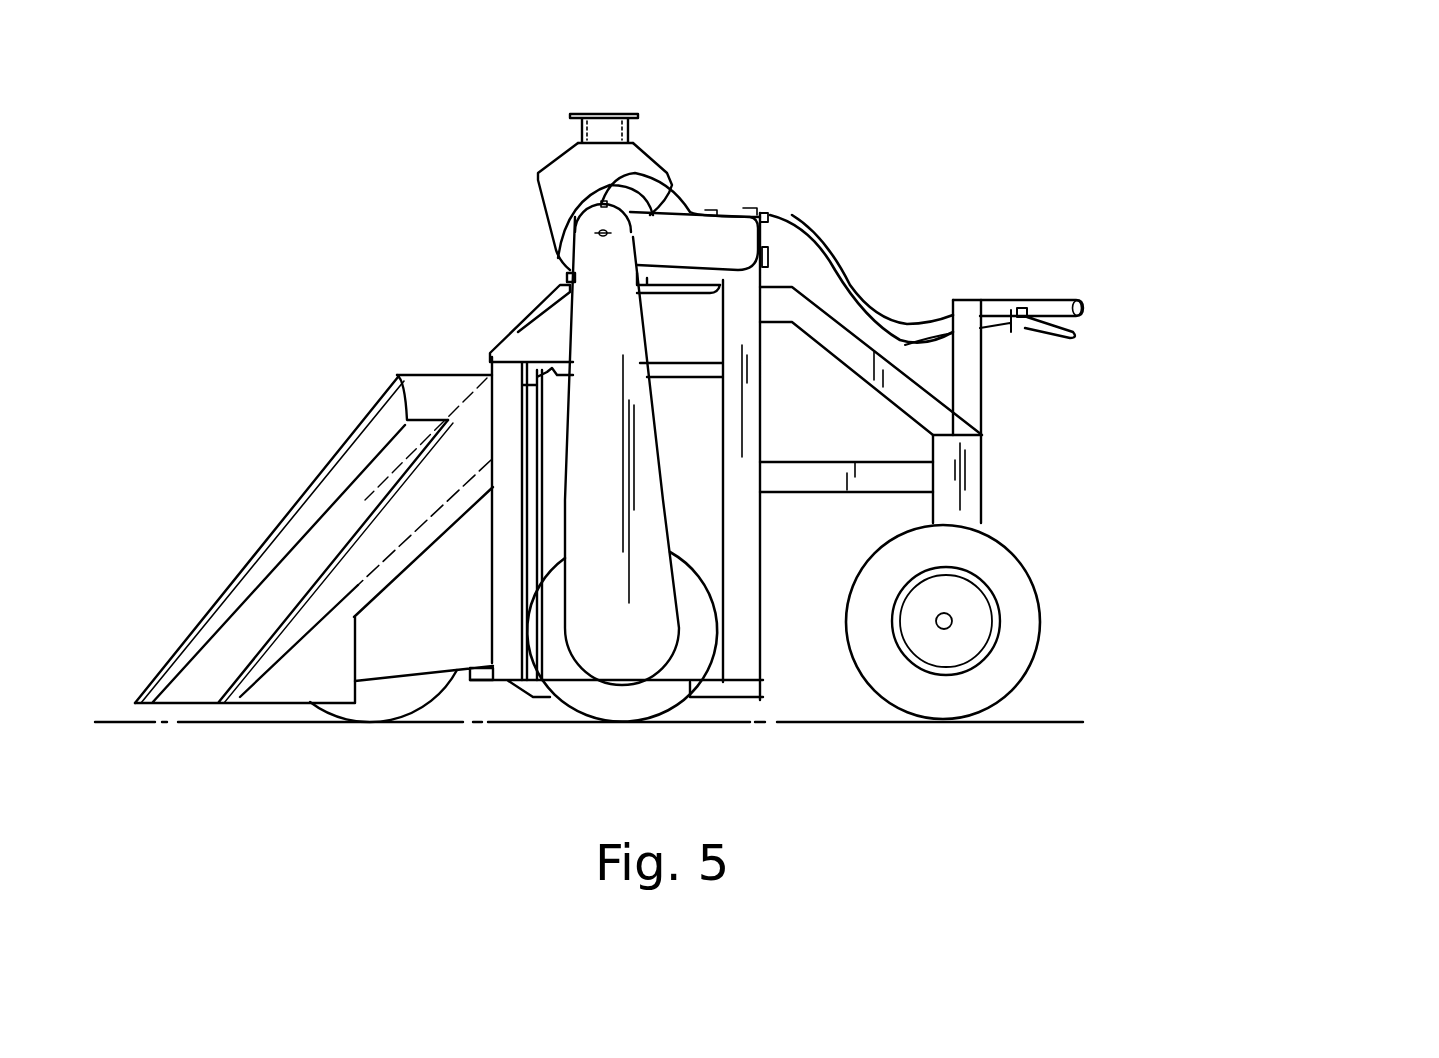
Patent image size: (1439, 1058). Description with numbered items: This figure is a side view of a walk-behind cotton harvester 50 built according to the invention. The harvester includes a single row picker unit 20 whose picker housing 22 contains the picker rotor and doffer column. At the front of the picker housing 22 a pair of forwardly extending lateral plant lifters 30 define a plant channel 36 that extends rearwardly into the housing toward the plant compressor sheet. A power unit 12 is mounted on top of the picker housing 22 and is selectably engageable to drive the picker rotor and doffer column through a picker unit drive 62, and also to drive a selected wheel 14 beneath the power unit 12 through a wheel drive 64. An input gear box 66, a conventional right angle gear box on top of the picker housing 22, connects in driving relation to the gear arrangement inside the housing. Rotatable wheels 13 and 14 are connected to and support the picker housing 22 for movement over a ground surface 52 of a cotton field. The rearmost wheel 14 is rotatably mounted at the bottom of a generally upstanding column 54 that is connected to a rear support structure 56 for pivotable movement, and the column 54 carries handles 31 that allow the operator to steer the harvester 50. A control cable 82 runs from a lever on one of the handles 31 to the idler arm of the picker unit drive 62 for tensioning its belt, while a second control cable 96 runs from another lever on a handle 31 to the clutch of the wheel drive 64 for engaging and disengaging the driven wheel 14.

The power unit 12 is at (648, 151).
The wheel 13 is at (430, 710).
The wheel 14 is at (1028, 565).
The single row picker unit 20 is at (502, 336).
The picker housing 22 is at (538, 306).
The plant lifters 30 is at (303, 590).
The handles 31 is at (1087, 296).
The plant channel 36 is at (360, 495).
The walk-behind cotton harvester 50 is at (1244, 603).
The ground surface 52 is at (1042, 713).
The column 54 is at (983, 380).
The rear support structure 56 is at (987, 472).
The picker unit drive 62 is at (762, 214).
The wheel drive 64 is at (657, 433).
The input gear box 66 is at (763, 250).
The control cable 82 is at (905, 345).
The control cable 96 is at (873, 297).